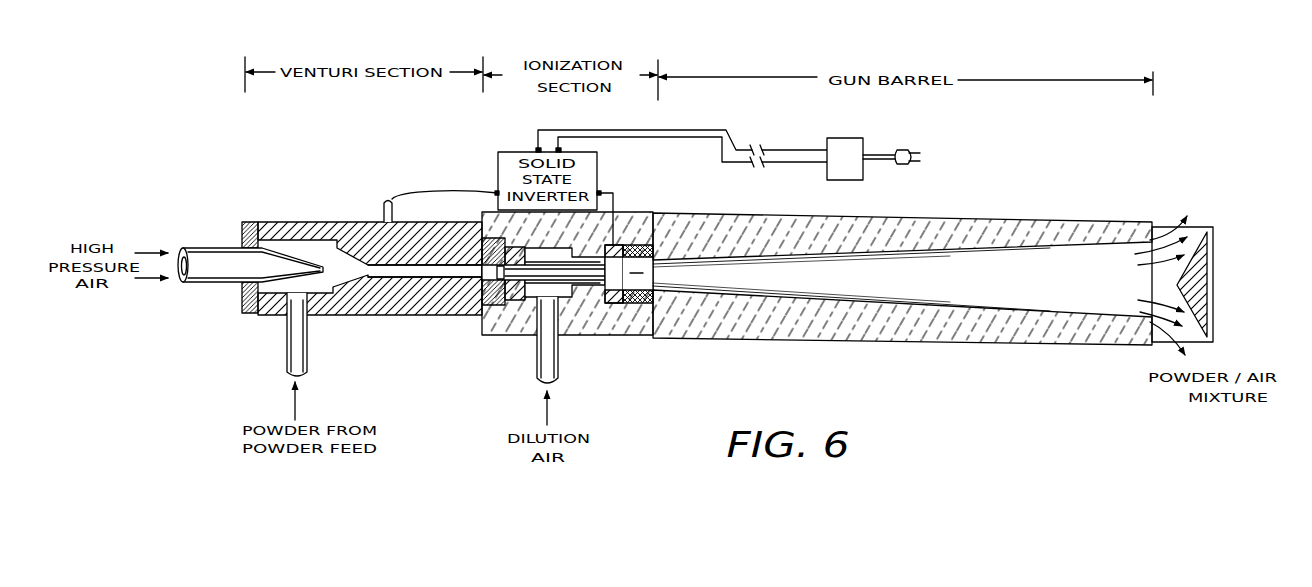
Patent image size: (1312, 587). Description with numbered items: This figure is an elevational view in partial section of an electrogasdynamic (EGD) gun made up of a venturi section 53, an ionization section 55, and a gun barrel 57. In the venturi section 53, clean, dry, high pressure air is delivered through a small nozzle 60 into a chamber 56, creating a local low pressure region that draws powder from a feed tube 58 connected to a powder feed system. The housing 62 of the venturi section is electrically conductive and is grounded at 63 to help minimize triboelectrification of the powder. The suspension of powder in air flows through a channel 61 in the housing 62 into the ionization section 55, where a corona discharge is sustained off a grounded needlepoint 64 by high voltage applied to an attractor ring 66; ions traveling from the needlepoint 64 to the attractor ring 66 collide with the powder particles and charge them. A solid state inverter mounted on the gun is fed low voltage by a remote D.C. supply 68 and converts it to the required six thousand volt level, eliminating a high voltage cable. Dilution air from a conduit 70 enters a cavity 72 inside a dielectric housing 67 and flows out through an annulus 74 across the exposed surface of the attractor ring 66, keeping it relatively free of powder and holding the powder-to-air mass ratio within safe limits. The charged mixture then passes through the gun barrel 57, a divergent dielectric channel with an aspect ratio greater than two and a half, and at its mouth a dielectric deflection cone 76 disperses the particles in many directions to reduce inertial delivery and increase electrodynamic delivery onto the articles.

The venturi section 53 is at (330, 255).
The ionization section 55 is at (561, 278).
The chamber 56 is at (283, 243).
The gun barrel 57 is at (1006, 212).
The feed tube 58 is at (286, 347).
The small nozzle 60 is at (213, 249).
The channel 61 is at (404, 271).
The housing 62 is at (314, 222).
The ground 63 is at (385, 198).
The needlepoint 64 is at (601, 281).
The attractor ring 66 is at (631, 258).
The dielectric housing 67 is at (613, 247).
The D.C. supply 68 is at (822, 173).
The conduit 70 is at (537, 362).
The cavity 72 is at (566, 291).
The annulus 74 is at (581, 285).
The deflection cone 76 is at (1213, 265).